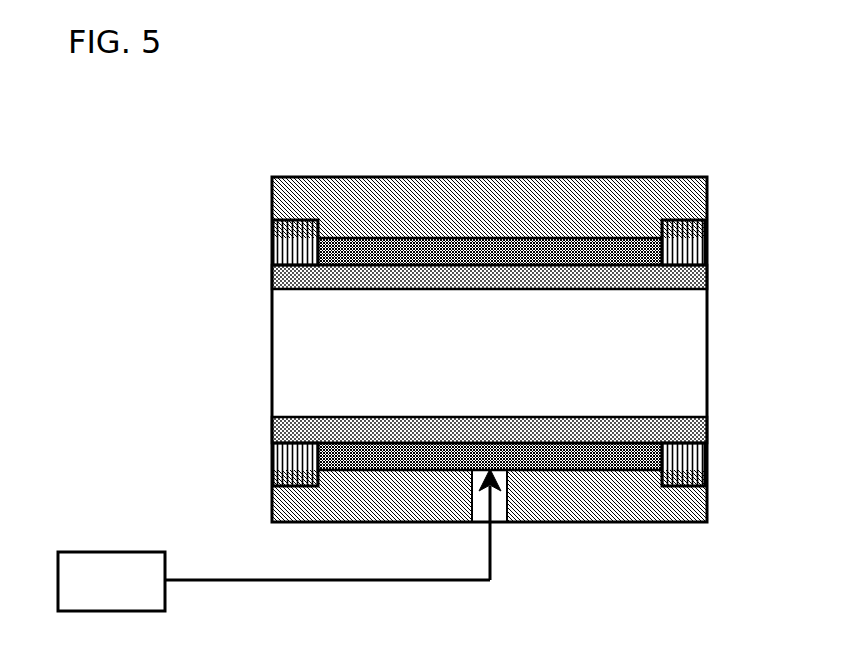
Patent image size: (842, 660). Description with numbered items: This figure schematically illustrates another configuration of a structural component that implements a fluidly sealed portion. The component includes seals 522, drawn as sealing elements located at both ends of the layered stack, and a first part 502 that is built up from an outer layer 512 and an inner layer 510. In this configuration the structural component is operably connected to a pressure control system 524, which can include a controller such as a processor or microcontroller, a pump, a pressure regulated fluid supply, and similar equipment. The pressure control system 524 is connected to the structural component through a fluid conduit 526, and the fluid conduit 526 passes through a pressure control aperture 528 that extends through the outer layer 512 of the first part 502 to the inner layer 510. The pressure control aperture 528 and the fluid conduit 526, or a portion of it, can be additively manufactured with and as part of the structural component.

The first part 502 is at (435, 206).
The inner layer 510 is at (483, 253).
The outer layer 512 is at (395, 205).
The seals 522 is at (698, 240).
The pressure control system 524 is at (111, 581).
The fluid conduit 526 is at (240, 577).
The pressure control aperture 528 is at (504, 482).